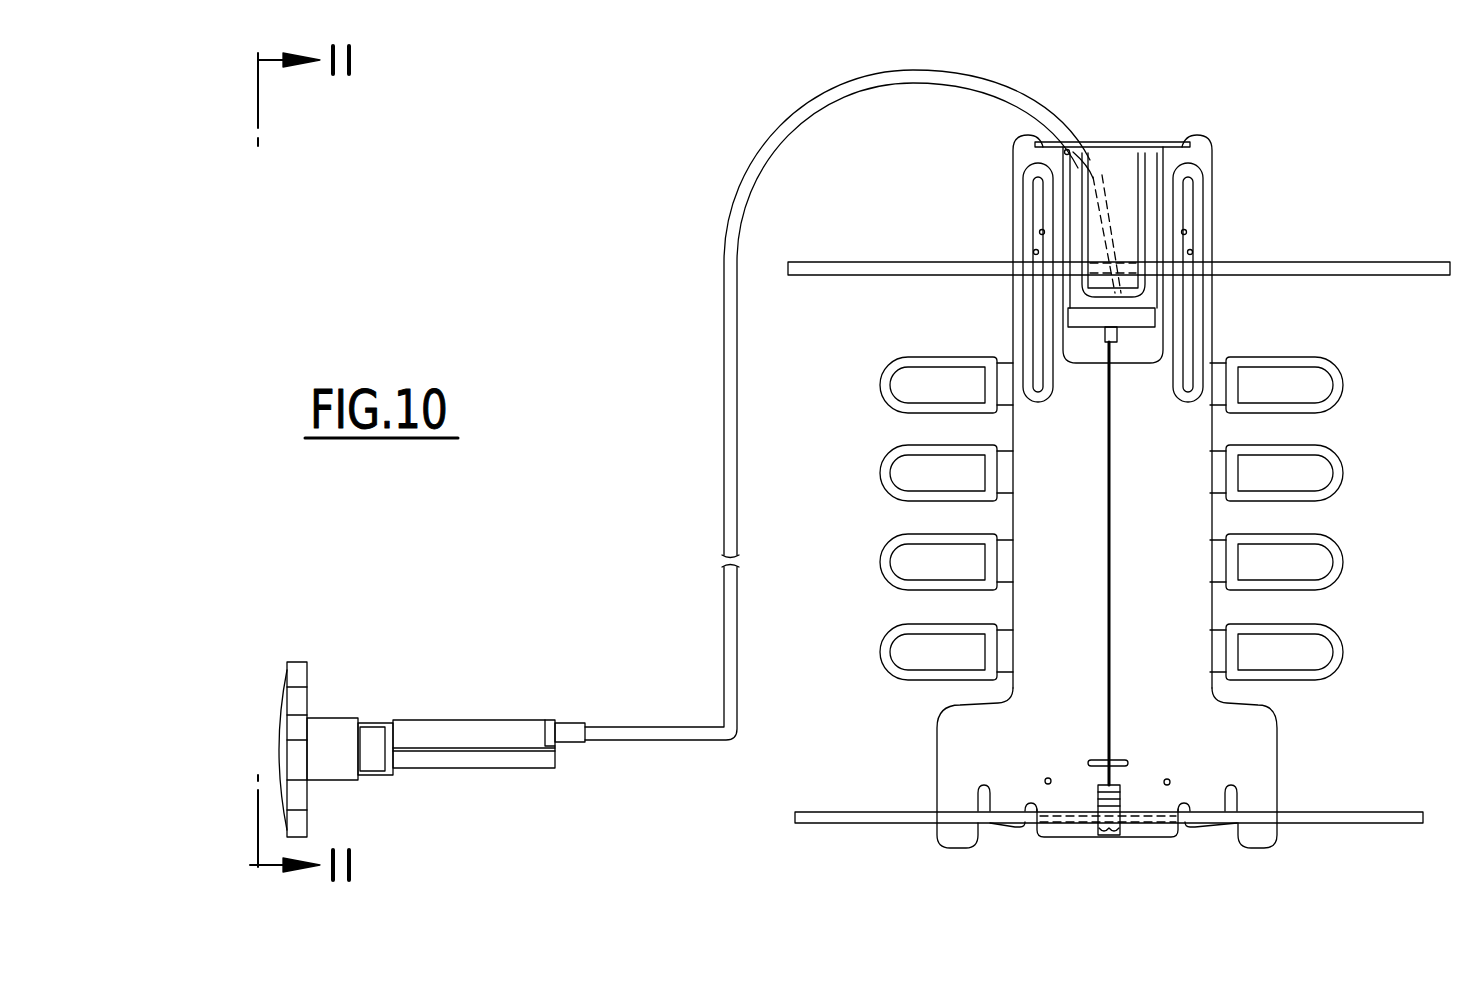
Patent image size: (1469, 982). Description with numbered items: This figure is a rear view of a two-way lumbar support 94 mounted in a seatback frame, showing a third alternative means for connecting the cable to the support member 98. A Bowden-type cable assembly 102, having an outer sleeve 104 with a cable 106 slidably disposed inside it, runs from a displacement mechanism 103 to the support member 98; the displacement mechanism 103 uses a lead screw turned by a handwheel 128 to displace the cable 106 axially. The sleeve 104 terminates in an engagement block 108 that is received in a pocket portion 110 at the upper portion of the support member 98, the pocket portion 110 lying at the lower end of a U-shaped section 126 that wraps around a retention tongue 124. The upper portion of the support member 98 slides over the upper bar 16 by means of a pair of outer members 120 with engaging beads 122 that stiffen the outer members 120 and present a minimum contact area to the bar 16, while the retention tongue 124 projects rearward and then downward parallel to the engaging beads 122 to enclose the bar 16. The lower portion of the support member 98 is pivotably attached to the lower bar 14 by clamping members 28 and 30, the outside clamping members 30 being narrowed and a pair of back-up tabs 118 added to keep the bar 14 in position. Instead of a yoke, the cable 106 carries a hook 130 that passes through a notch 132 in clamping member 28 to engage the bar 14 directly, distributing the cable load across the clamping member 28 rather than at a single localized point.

The drug delivery assembly 94 is at (608, 252).
The upper bar 16 is at (830, 262).
The lower bar 14 is at (822, 812).
The support member 98 is at (1012, 505).
The outer members 120 is at (1013, 168).
The engaging beads 122 is at (1033, 232).
The retention tongue 124 is at (1137, 163).
The chamber 126 is at (1150, 295).
The engagement block 108 is at (1158, 327).
The pocket portion 110 is at (1065, 348).
The cable 106 is at (1113, 731).
The hook 130 is at (1120, 803).
The notch 132 is at (1113, 838).
The clamping member 28 is at (1135, 840).
The back-up tabs 118 is at (1005, 828).
The outside clamping members 30 is at (950, 849).
The Bowden-type cable assembly 102 is at (718, 503).
The outer sleeve 104 is at (725, 600).
The displacement mechanism 103 is at (452, 720).
The handwheel 128 is at (308, 662).